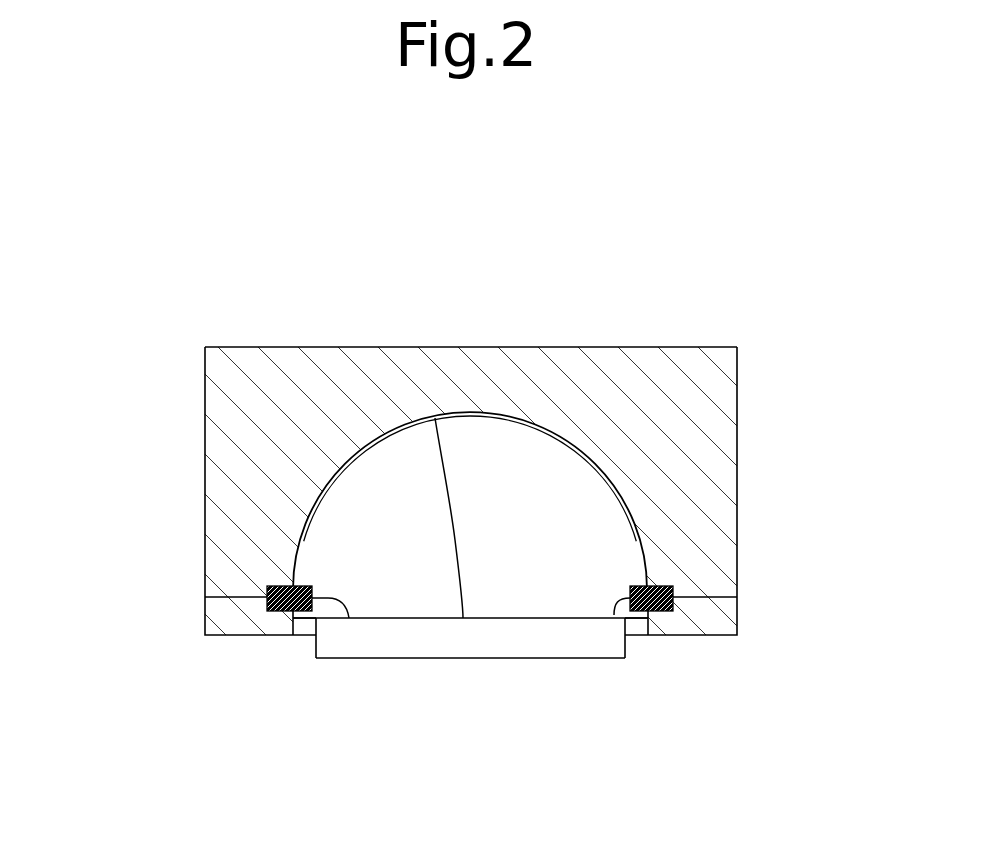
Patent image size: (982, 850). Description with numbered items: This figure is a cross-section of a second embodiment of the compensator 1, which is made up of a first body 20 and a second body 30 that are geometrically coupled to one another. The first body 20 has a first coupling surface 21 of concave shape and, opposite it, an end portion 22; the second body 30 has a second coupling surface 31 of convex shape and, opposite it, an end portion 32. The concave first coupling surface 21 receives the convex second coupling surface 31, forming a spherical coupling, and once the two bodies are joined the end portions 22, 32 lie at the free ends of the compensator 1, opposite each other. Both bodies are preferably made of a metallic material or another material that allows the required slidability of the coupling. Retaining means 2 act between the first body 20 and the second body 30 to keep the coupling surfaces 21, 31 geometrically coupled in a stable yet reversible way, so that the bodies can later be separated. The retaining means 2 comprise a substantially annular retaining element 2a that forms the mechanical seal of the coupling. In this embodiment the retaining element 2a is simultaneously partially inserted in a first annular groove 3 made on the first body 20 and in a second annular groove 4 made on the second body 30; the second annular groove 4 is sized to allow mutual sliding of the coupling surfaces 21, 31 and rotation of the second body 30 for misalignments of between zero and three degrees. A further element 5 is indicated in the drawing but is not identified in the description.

The compensator 1 is at (192, 218).
The retaining means 2 is at (665, 640).
The retaining element 2a is at (675, 597).
The first annular groove 3 is at (663, 587).
The second annular groove 4 is at (349, 618).
The joint portion 5 is at (262, 562).
The first body 20 is at (754, 362).
The first coupling surface 21 is at (463, 412).
The end portion 22 is at (590, 348).
The second body 30 is at (534, 697).
The second coupling surface 31 is at (463, 618).
The end portion 32 is at (602, 658).